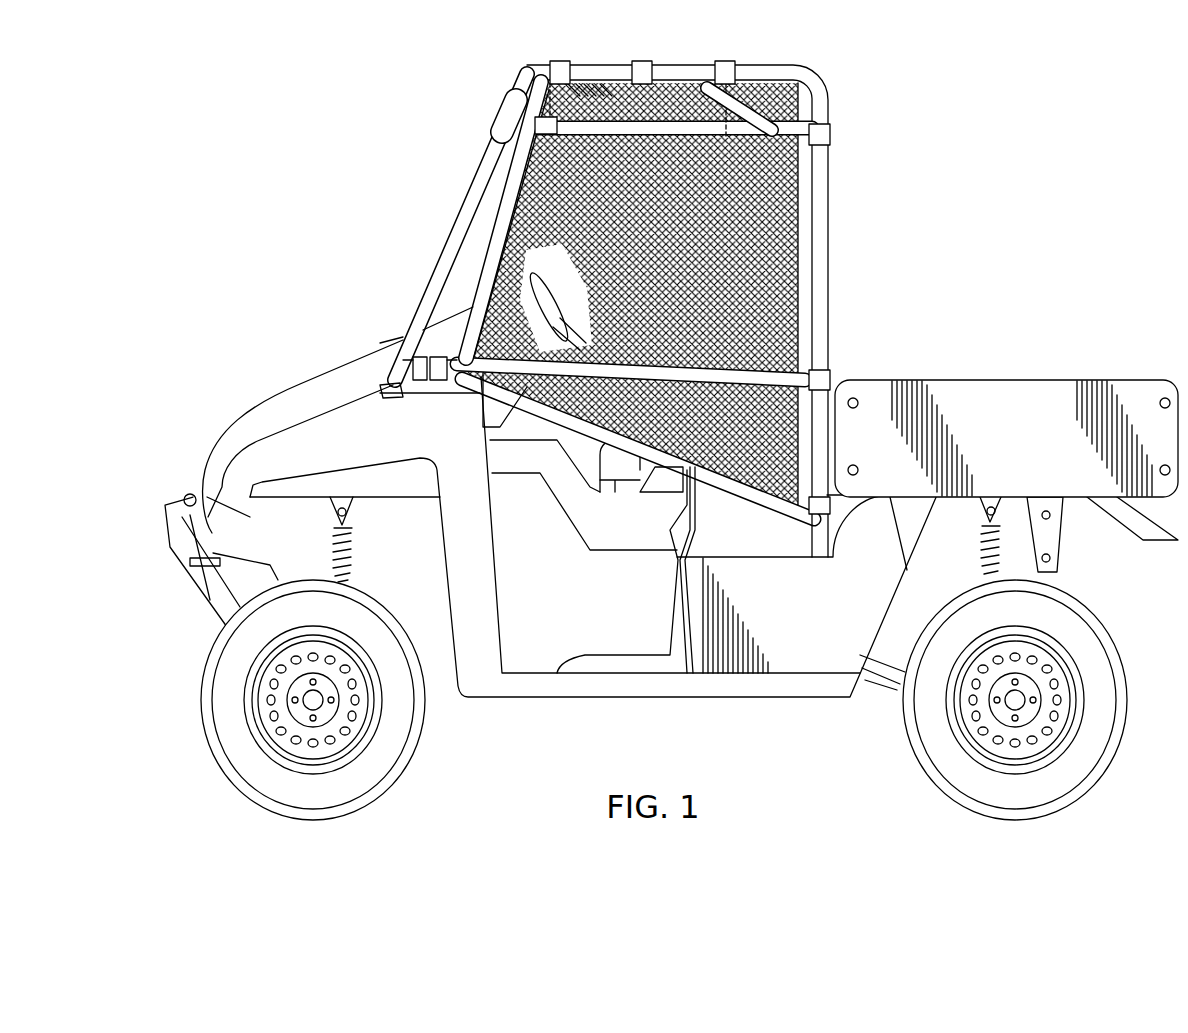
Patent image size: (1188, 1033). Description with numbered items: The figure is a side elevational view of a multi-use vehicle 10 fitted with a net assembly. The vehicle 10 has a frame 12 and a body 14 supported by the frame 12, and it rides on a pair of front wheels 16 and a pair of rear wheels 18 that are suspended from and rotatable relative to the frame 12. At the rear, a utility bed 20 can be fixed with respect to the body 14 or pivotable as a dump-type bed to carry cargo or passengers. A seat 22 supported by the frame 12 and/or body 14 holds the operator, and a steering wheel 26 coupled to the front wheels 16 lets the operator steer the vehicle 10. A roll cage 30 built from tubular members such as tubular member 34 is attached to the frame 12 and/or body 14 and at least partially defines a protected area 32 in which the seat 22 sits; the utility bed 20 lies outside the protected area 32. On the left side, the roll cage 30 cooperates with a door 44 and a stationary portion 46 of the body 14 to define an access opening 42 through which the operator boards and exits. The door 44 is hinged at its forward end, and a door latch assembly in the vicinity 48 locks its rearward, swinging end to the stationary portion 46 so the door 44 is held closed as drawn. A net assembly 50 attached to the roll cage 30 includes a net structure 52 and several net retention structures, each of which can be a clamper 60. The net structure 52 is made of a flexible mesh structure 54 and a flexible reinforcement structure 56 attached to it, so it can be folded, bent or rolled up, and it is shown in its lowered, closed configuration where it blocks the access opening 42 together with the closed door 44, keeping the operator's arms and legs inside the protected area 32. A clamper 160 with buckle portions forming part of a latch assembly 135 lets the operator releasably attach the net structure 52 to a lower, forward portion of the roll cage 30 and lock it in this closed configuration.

The vehicle 10 is at (671, 450).
The frame 12 is at (450, 700).
The body 14 is at (301, 370).
The front wheels 16 is at (214, 757).
The rear wheels 18 is at (1116, 757).
The utility bed 20 is at (1008, 378).
The seat 22 is at (618, 471).
The steering wheel 26 is at (551, 286).
The roll cage 30 is at (647, 281).
The protected area 32 is at (490, 220).
The tubular member 34 is at (748, 64).
The access opening 42 is at (460, 220).
The door 44 is at (650, 612).
The stationary portion 46 is at (740, 530).
The door latch assembly vicinity 48 is at (667, 505).
The net assembly 50 is at (492, 98).
The net structure 52 is at (510, 169).
The mesh structure 54 is at (778, 228).
The reinforcement structure 56 is at (785, 112).
The clamper 60 is at (561, 70).
The latch assembly 135 is at (430, 395).
The clamper 160 is at (397, 356).